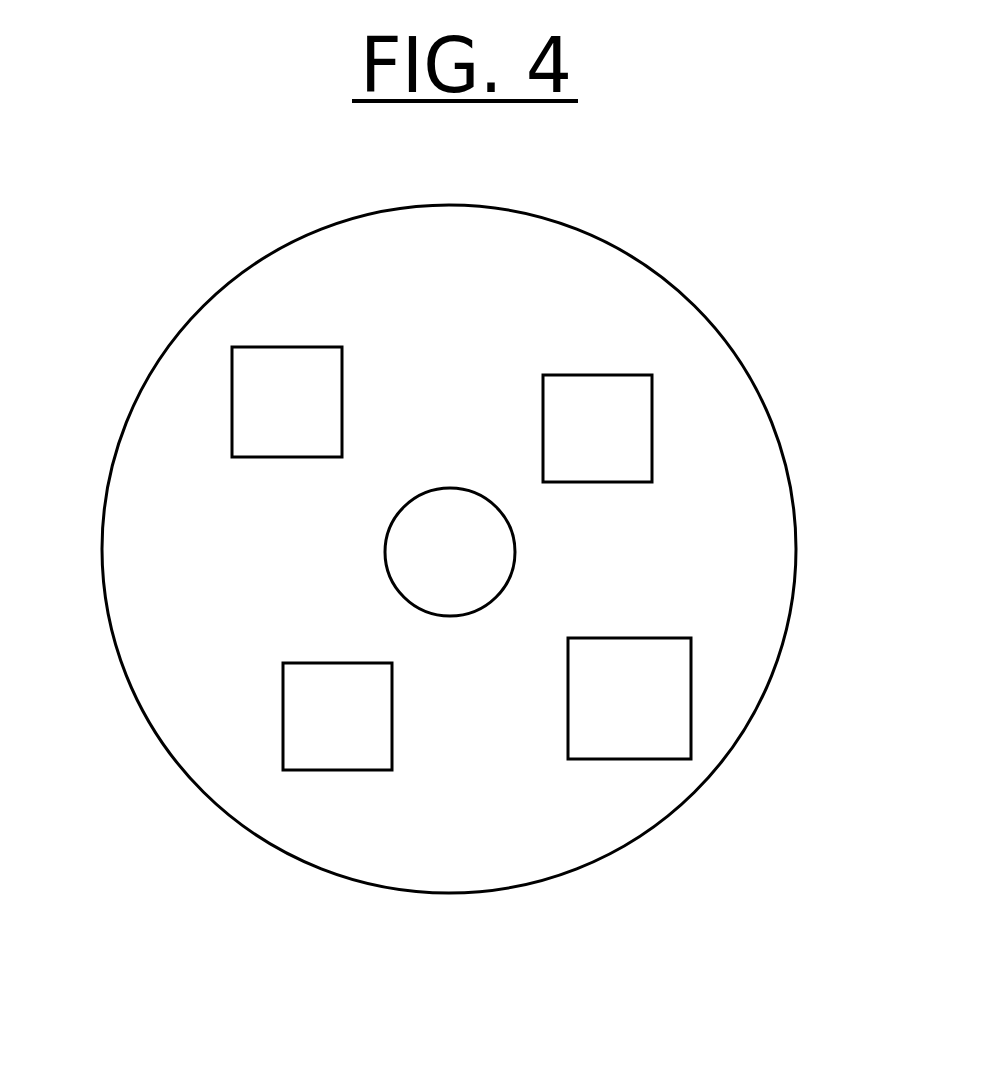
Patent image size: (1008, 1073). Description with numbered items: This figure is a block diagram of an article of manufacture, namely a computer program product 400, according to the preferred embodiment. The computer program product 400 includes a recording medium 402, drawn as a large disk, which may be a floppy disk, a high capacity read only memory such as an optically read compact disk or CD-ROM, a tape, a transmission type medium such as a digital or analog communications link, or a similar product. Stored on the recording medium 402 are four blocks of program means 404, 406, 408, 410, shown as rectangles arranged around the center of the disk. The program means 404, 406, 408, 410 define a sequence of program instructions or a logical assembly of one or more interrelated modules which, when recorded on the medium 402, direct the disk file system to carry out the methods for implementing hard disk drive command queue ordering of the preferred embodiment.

The computer program product 400 is at (750, 318).
The recording medium 402 is at (159, 349).
The program means 404 is at (337, 716).
The program means 406 is at (629, 698).
The program means 408 is at (597, 428).
The program means 410 is at (287, 402).